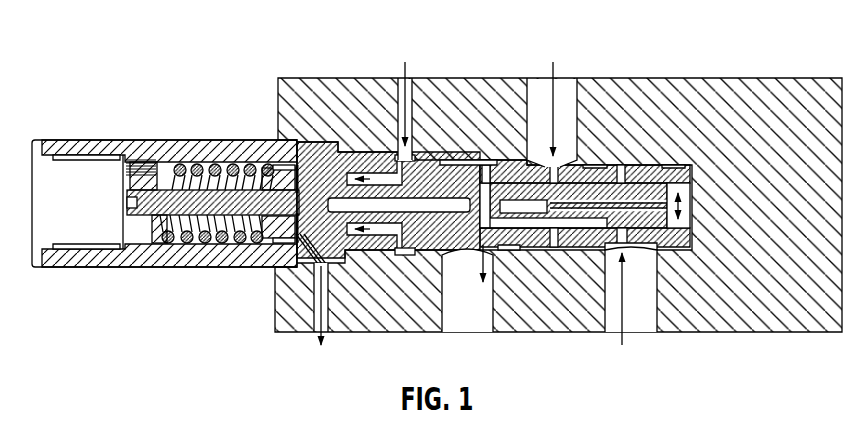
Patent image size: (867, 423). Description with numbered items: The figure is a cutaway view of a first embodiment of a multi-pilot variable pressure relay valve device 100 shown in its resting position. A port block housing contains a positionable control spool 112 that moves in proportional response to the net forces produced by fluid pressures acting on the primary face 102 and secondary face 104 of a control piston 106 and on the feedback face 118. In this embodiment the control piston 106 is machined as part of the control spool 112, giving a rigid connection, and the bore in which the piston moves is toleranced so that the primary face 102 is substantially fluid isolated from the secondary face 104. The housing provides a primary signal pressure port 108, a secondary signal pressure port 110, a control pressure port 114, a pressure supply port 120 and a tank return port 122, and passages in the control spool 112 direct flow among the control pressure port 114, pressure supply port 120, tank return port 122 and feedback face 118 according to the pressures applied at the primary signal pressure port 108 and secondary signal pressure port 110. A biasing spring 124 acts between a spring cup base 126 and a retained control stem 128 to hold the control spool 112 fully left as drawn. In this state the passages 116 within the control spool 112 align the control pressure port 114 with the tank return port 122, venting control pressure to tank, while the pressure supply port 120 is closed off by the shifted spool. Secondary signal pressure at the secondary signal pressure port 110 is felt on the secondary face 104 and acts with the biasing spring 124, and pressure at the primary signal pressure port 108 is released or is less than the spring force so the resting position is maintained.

The multi-pilot variable pressure relay valve device 100 is at (146, 46).
The primary face 102 is at (270, 242).
The secondary face 104 is at (358, 235).
The control piston 106 is at (328, 178).
The primary signal pressure port 108 is at (310, 344).
The secondary signal pressure port 110 is at (399, 66).
The control spool 112 is at (430, 172).
The control pressure port 114 is at (565, 66).
The passages 116 is at (600, 187).
The feedback face 118 is at (690, 170).
The pressure supply port 120 is at (651, 343).
The tank return port 122 is at (486, 343).
The biasing spring 124 is at (213, 180).
The spring cup base 126 is at (273, 173).
The retained control stem 128 is at (157, 197).